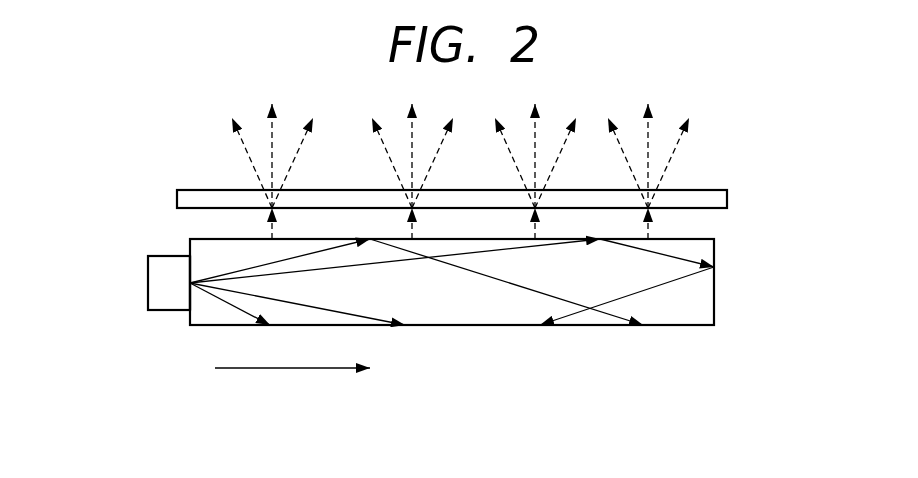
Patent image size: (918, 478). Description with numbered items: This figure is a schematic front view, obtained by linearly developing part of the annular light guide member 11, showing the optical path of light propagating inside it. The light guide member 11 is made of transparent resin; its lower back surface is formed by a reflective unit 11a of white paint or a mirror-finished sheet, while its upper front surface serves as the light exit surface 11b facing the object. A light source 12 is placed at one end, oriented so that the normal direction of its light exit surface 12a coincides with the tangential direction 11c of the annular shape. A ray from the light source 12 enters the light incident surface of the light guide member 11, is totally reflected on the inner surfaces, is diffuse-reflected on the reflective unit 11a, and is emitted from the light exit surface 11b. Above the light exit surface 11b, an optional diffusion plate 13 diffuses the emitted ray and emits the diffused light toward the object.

The light guide member 11 is at (727, 270).
The reflective unit 11a is at (678, 326).
The light exit surface 11b is at (673, 238).
The tangential direction 11c is at (288, 370).
The light source 12 is at (163, 277).
The light exit surface of light source 12a is at (190, 283).
The diffusion plate 13 is at (702, 189).